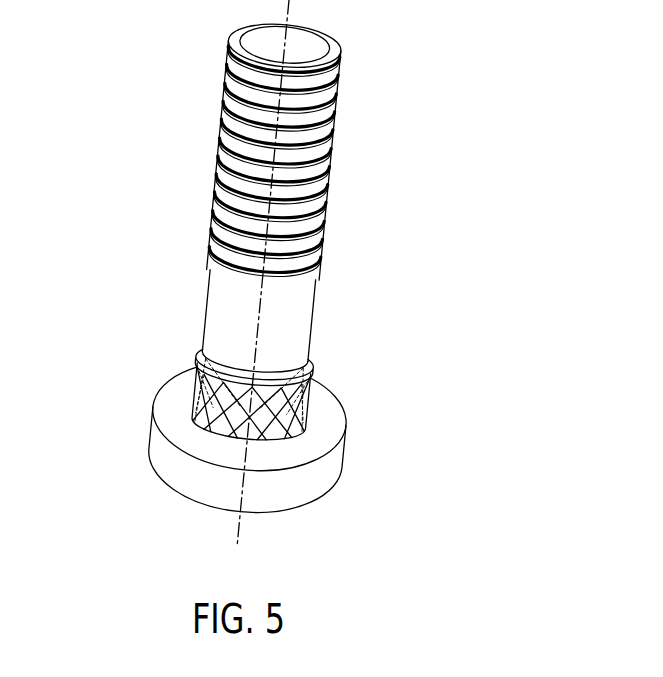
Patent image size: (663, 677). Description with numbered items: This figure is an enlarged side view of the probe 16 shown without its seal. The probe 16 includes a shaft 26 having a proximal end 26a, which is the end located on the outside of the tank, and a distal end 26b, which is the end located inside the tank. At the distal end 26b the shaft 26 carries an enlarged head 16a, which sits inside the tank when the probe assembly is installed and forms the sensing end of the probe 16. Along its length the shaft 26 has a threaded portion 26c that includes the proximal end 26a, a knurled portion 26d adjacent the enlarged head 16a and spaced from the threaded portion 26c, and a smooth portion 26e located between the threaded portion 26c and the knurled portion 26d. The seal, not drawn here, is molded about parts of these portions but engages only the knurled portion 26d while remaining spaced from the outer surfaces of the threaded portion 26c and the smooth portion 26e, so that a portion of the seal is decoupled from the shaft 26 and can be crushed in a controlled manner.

The probe 16 is at (223, 479).
The enlarged head 16a is at (327, 465).
The shaft 26 is at (142, 150).
The proximal end 26a is at (265, 68).
The distal end 26b is at (328, 398).
The threaded portion 26c is at (357, 65).
The knurled portion 26d is at (185, 350).
The smooth portion 26e is at (198, 257).